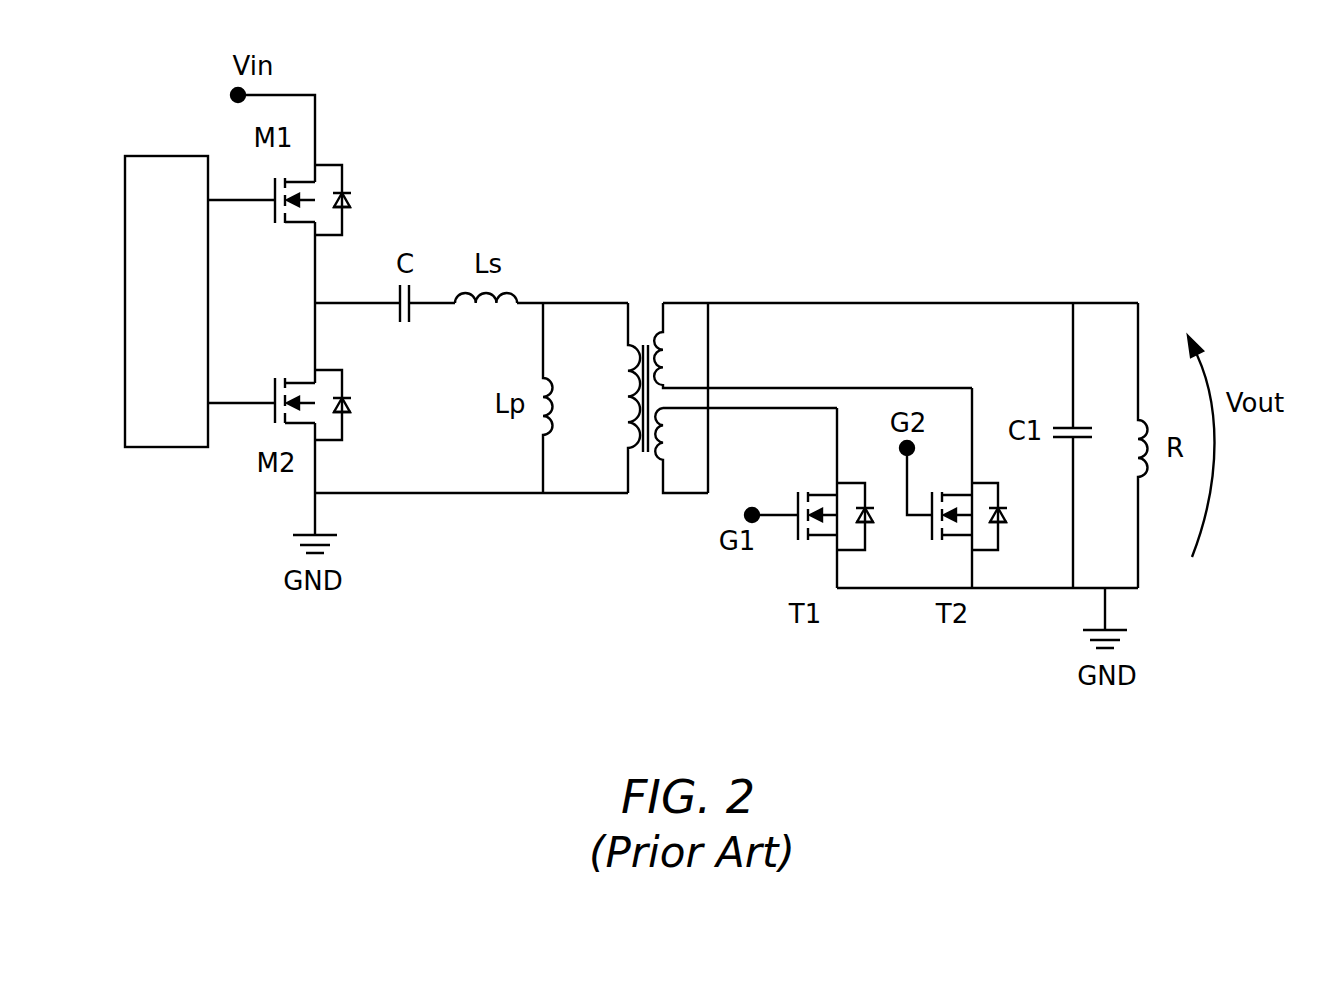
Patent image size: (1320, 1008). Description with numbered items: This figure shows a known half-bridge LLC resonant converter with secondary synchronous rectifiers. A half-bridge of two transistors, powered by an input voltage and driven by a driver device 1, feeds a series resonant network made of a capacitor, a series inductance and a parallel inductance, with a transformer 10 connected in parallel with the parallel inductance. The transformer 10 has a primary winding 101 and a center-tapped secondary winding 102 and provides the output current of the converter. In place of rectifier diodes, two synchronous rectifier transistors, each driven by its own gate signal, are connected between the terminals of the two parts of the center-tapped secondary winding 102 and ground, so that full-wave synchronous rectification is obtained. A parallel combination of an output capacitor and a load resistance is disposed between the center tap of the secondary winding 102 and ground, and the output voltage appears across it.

The device 1 is at (171, 155).
The transformer 10 is at (769, 352).
The primary winding 101 is at (603, 398).
The center-tapped secondary winding 102 is at (705, 290).